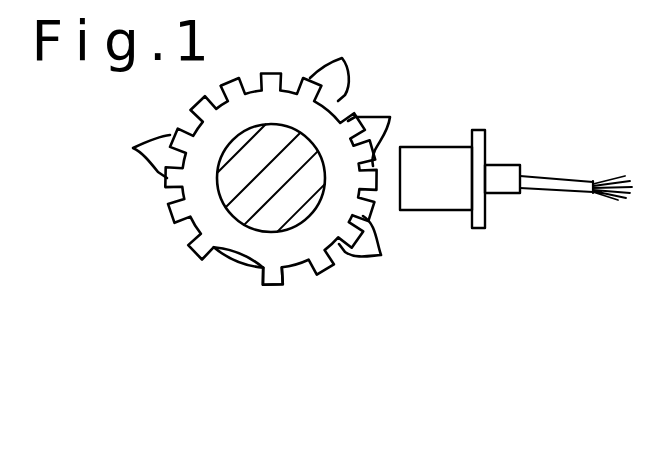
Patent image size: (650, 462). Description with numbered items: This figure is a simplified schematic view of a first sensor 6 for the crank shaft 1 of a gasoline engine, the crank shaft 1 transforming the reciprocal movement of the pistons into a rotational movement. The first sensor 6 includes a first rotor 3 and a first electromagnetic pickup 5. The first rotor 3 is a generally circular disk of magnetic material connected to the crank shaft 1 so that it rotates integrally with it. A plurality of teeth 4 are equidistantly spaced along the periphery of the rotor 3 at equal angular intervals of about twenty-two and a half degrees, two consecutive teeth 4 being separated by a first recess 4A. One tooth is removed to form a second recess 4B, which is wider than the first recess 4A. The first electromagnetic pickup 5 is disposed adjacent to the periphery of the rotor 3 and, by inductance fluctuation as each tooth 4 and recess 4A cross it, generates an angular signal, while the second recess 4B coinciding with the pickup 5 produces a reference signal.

The crank shaft 1 is at (236, 183).
The first rotor 3 is at (285, 252).
The teeth 4 is at (258, 151).
The first recess 4A is at (389, 127).
The second recess 4B is at (228, 283).
The first electromagnetic pickup 5 is at (440, 197).
The first sensor 6 is at (513, 331).